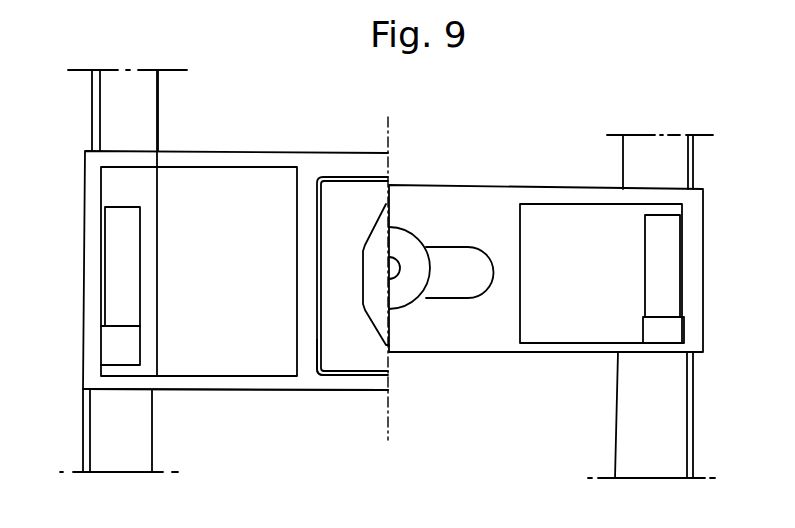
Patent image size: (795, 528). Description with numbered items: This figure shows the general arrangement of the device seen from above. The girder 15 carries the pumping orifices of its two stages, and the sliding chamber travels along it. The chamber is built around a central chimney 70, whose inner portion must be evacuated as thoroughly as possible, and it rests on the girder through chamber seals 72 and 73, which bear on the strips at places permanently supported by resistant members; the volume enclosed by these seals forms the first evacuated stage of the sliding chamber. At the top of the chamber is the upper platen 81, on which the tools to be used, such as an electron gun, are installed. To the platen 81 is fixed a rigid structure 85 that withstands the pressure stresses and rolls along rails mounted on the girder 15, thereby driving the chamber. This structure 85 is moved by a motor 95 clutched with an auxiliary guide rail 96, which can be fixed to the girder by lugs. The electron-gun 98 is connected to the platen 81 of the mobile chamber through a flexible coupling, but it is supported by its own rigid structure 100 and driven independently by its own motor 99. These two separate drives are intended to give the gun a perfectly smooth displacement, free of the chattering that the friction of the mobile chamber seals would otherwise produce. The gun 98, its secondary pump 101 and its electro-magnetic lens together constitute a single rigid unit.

The girder 15 is at (258, 114).
The chimney 70 is at (364, 279).
The chamber seal 72 is at (352, 177).
The chamber seal 73 is at (306, 365).
The upper platen 81 is at (297, 243).
The rigid structure 85 is at (212, 380).
The motor 95 is at (117, 240).
The auxiliary guide rail 96 is at (87, 425).
The electron-gun 98 is at (405, 248).
The motor 99 is at (668, 278).
The rigid structure 100 is at (482, 327).
The secondary pump 101 is at (465, 259).